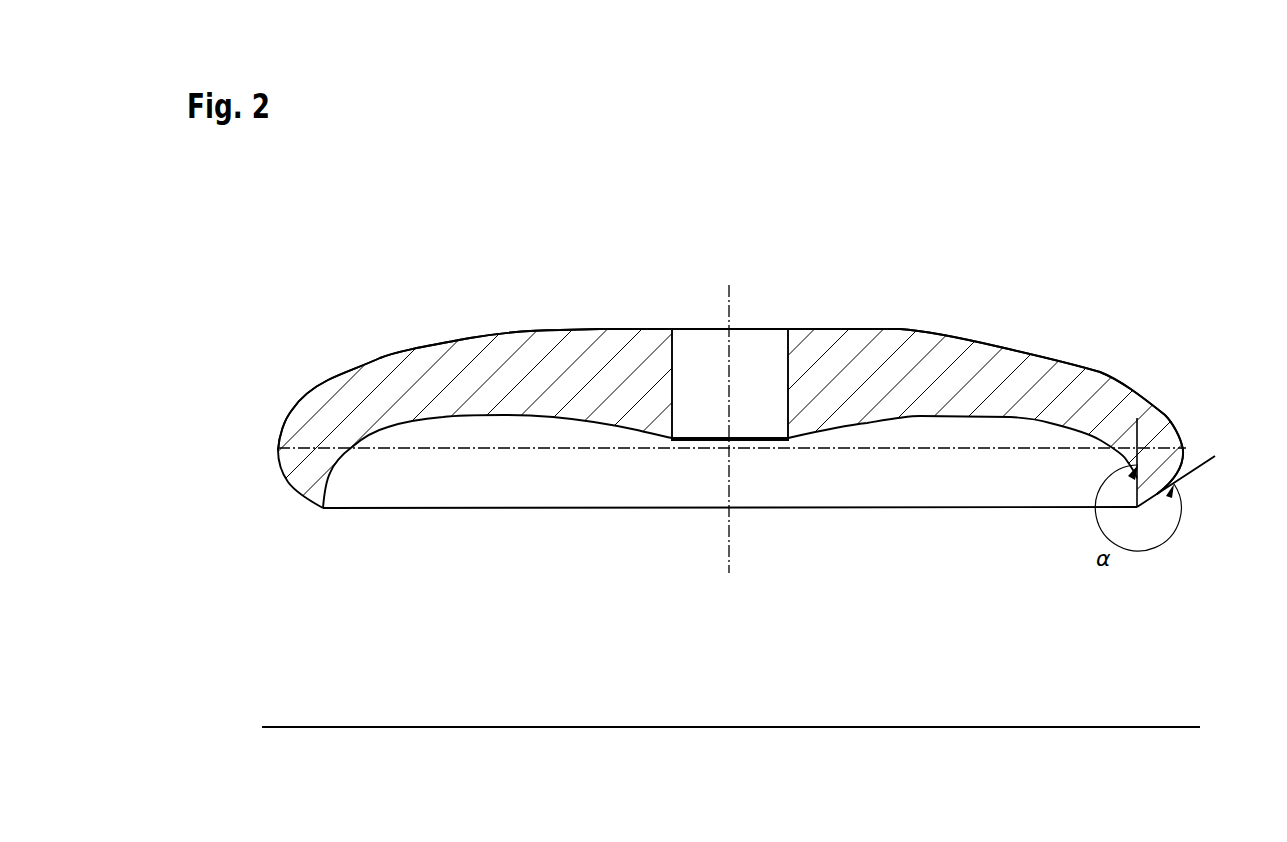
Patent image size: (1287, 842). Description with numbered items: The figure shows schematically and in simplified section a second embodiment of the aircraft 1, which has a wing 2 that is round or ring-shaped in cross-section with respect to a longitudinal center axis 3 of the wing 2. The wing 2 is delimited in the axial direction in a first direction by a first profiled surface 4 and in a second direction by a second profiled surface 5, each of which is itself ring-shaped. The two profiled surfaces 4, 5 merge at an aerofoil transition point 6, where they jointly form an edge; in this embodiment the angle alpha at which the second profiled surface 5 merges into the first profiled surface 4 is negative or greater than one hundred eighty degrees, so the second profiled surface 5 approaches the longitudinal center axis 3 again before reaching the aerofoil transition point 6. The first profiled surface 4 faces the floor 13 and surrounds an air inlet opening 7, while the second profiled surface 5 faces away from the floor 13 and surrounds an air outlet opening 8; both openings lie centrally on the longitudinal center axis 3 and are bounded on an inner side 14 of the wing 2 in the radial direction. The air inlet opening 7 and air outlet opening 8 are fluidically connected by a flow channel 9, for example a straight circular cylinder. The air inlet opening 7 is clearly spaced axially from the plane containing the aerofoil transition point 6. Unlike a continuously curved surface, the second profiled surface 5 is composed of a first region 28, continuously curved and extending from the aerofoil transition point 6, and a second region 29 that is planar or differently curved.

The aircraft 1 is at (977, 267).
The wing 2 is at (1032, 312).
The longitudinal center axis 3 is at (731, 563).
The first profiled surface 4 is at (1010, 417).
The second profiled surface 5 is at (1078, 362).
The aerofoil transition point 6 is at (323, 508).
The air inlet opening 7 is at (695, 441).
The air outlet opening 8 is at (703, 327).
The flow channel 9 is at (762, 362).
The floor 13 is at (975, 727).
The inner side 14 is at (672, 327).
The first region 28 is at (375, 367).
The second region 29 is at (592, 327).